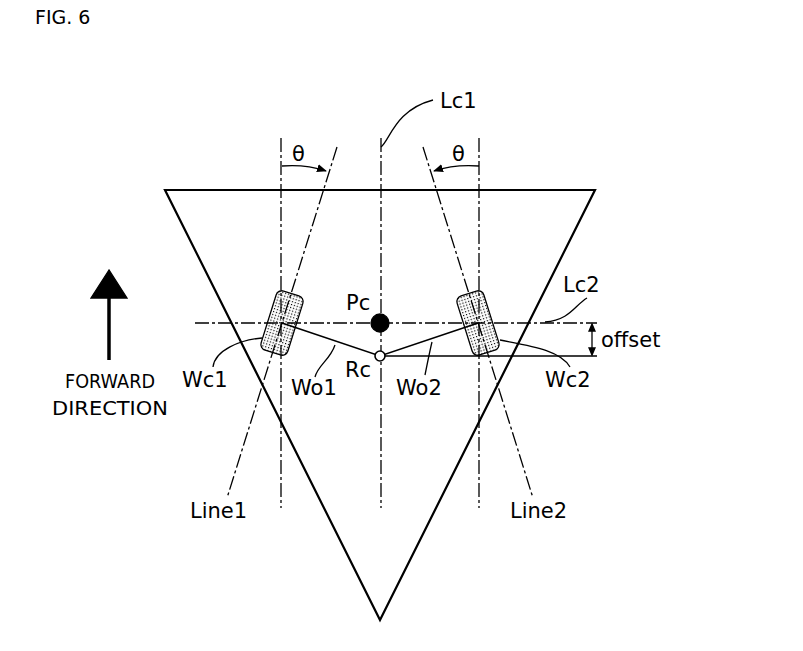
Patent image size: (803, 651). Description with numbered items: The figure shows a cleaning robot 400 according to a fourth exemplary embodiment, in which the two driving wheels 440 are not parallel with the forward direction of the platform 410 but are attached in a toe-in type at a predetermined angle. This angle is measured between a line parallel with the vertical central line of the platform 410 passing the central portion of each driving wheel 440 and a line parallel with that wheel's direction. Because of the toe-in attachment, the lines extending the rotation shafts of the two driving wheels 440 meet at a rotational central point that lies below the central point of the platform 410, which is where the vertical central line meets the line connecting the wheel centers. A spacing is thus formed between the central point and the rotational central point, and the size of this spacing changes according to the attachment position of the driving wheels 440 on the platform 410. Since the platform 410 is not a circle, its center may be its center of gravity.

The cleaning robot 400 is at (298, 97).
The platform 410 is at (532, 190).
The driving wheels 440 is at (267, 307).